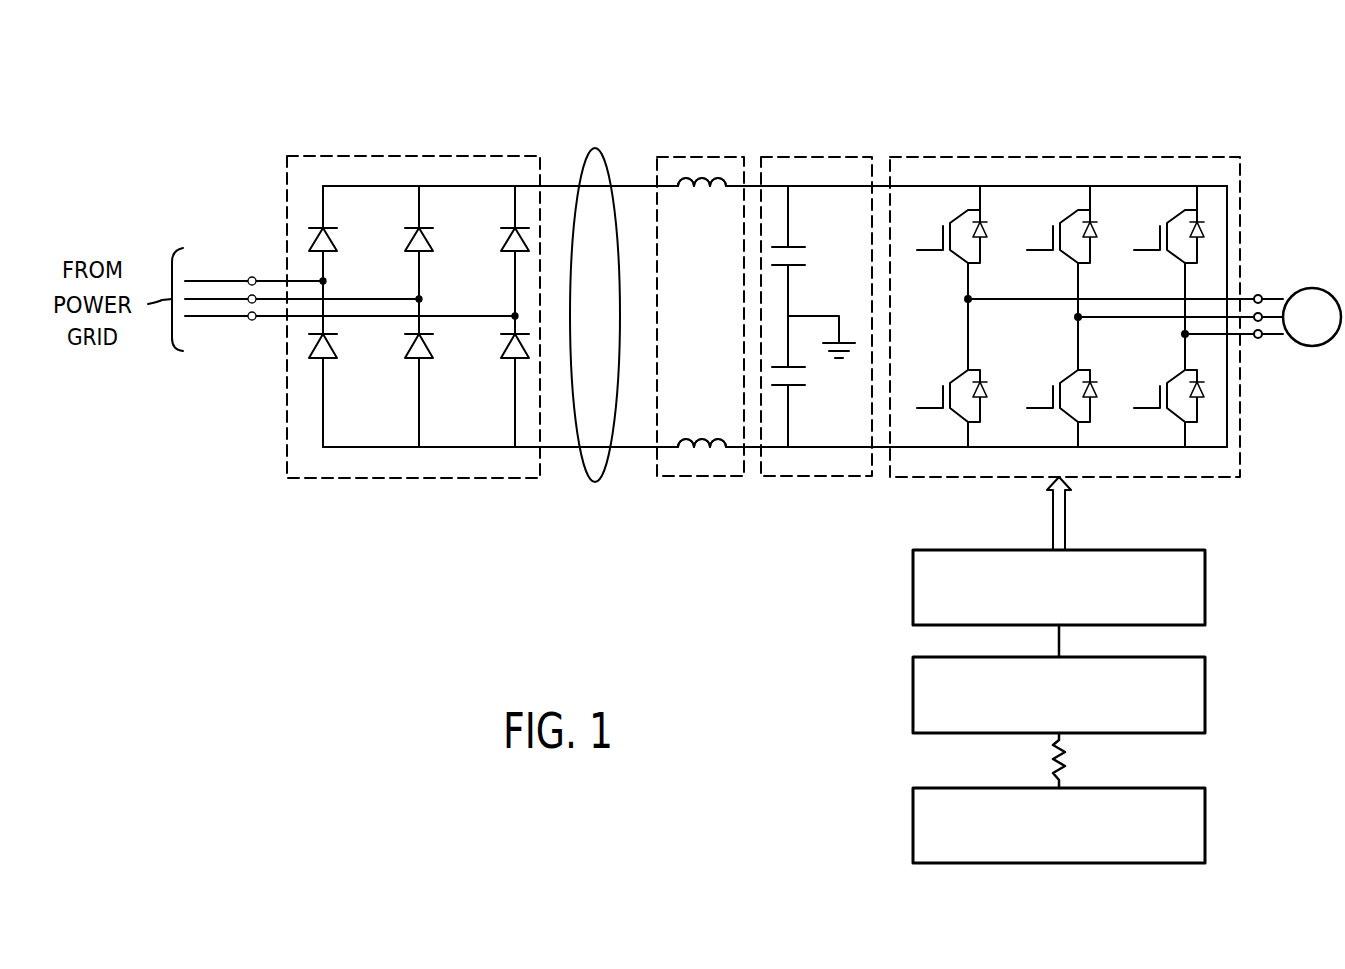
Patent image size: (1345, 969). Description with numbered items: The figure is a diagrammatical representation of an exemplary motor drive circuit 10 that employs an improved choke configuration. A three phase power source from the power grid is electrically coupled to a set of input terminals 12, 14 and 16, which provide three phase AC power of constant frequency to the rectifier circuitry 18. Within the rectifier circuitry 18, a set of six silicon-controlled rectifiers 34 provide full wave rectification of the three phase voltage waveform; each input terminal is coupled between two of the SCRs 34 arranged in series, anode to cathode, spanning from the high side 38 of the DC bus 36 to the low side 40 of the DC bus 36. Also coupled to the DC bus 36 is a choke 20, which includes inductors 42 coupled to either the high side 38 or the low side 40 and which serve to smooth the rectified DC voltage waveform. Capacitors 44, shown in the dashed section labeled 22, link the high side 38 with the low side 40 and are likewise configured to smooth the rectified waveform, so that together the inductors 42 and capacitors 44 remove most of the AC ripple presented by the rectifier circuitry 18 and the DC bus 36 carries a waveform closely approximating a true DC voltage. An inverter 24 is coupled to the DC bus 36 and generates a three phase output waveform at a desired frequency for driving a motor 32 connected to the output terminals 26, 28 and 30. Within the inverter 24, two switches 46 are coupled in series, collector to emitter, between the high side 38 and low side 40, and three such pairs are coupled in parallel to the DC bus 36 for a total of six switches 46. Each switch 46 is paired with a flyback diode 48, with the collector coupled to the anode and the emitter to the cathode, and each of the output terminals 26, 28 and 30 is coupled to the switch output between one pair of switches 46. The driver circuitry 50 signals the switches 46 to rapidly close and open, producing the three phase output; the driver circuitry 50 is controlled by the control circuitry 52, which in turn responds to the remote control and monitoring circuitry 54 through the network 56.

The motor drive circuit 10 is at (903, 70).
The input terminal 12 is at (251, 277).
The input terminal 14 is at (250, 281).
The input terminal 16 is at (252, 320).
The rectifier circuitry 18 is at (413, 291).
The choke 20 is at (700, 314).
The DC bus capacitor section 22 is at (816, 282).
The inverter 24 is at (1086, 289).
The output terminal 26 is at (1258, 295).
The output terminal 28 is at (1262, 313).
The output terminal 30 is at (1258, 338).
The motor 32 is at (1310, 348).
The silicon-controlled rectifiers 34 is at (418, 360).
The DC bus 36 is at (595, 148).
The high side of the DC bus 38 is at (626, 186).
The low side of the DC bus 40 is at (624, 447).
The inductors 42 is at (702, 187).
The capacitors 44 is at (800, 247).
The switches 46 is at (942, 234).
The flyback diode 48 is at (984, 226).
The driver circuitry 50 is at (1205, 584).
The control circuitry 52 is at (1205, 692).
The remote control and monitoring circuitry 54 is at (1205, 822).
The network 56 is at (1062, 782).